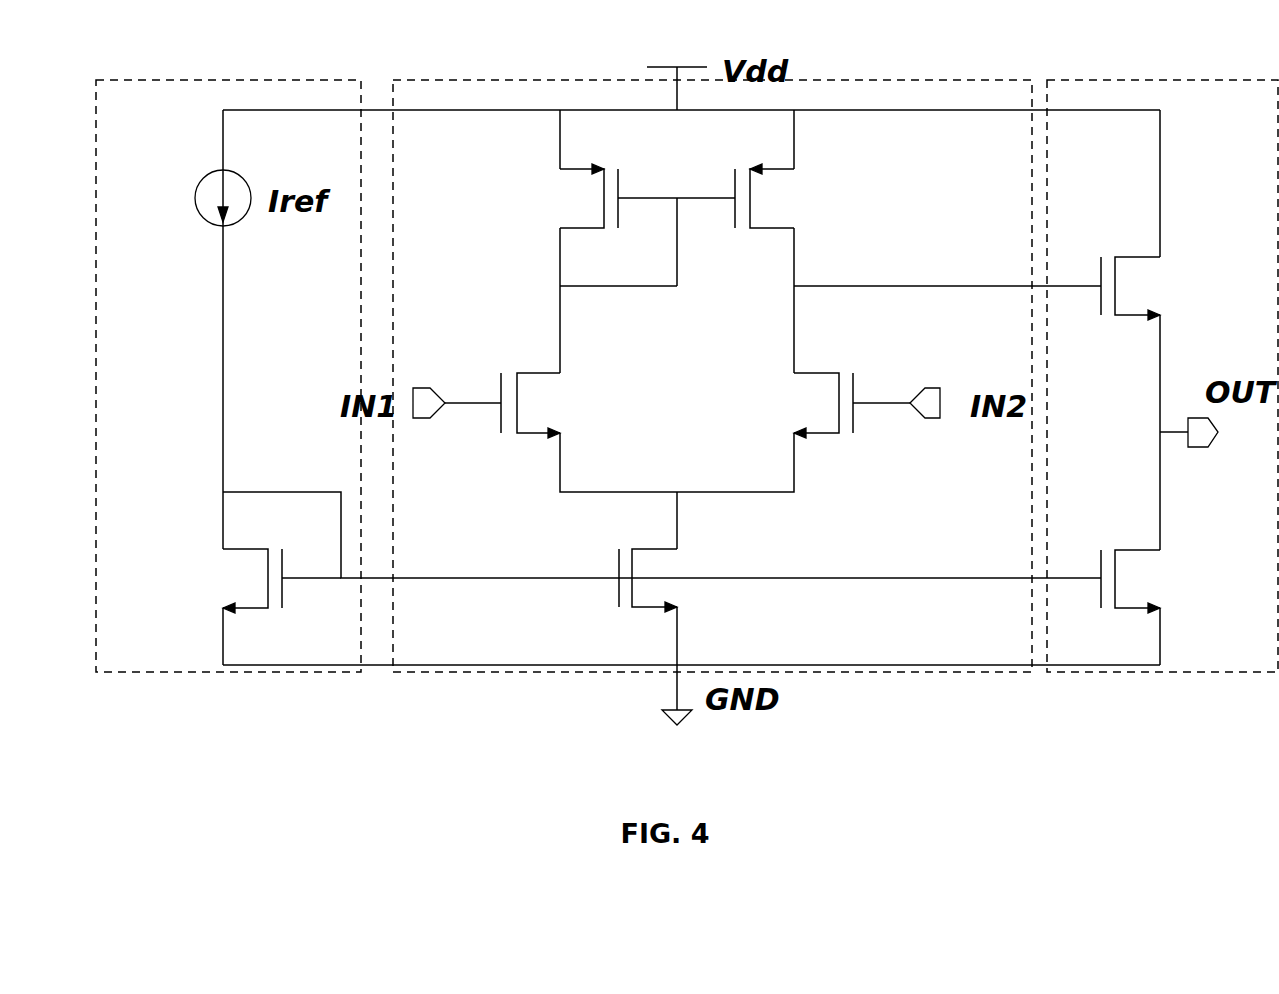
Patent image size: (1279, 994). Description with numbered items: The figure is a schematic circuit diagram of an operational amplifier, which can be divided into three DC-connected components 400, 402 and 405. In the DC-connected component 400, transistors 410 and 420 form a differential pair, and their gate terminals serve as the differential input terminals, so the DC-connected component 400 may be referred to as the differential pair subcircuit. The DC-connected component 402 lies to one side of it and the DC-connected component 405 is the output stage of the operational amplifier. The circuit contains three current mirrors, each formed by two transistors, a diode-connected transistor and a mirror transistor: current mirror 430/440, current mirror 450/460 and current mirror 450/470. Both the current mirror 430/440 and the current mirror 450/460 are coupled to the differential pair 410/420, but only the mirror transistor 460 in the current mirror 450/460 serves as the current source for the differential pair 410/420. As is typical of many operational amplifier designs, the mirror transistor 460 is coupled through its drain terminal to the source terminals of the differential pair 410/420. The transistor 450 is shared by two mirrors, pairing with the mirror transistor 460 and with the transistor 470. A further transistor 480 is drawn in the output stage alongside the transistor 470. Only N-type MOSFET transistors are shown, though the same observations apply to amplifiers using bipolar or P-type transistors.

The DC-connected component 400 is at (532, 66).
The DC-connected component 402 is at (228, 74).
The DC-connected component 405 is at (1138, 70).
The transistor 410 is at (468, 438).
The transistor 420 is at (853, 455).
The transistor 430 is at (547, 190).
The transistor 440 is at (807, 200).
The transistor 450 is at (203, 580).
The mirror transistor 460 is at (704, 595).
The transistor 470 is at (1168, 267).
The output pull-down transistor 480 is at (1172, 580).